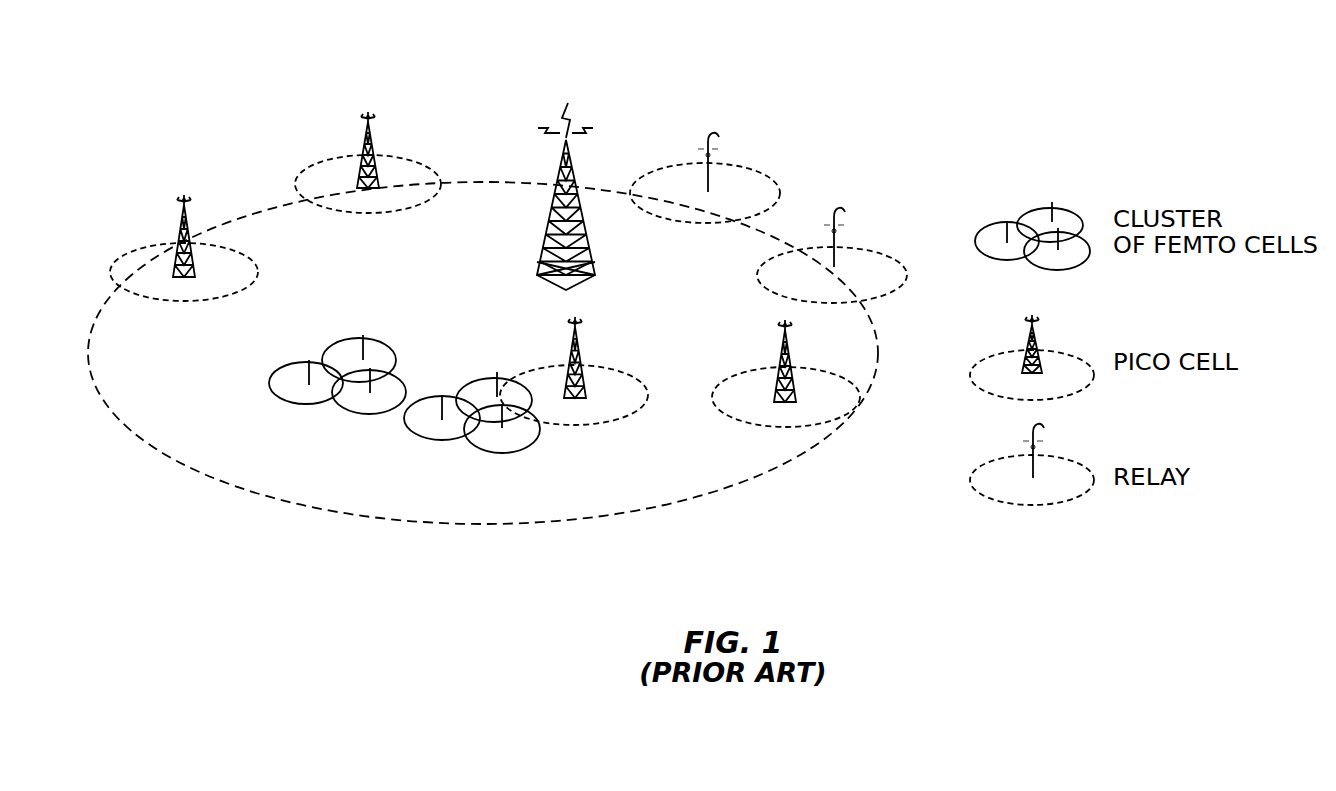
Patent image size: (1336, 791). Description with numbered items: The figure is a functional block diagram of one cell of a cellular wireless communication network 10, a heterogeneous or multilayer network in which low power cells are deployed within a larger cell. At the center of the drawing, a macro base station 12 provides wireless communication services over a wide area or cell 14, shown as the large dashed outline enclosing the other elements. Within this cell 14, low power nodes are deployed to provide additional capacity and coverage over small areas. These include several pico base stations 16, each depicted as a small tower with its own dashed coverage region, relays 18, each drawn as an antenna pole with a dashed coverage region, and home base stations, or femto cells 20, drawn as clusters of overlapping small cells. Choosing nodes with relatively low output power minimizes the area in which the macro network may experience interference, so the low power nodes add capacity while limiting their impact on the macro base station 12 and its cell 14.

The network 10 is at (523, 90).
The macro base station 12 is at (590, 262).
The cell 14 is at (332, 286).
The pico base stations 16 is at (372, 165).
The relays 18 is at (712, 180).
The femto cells 20 is at (400, 327).